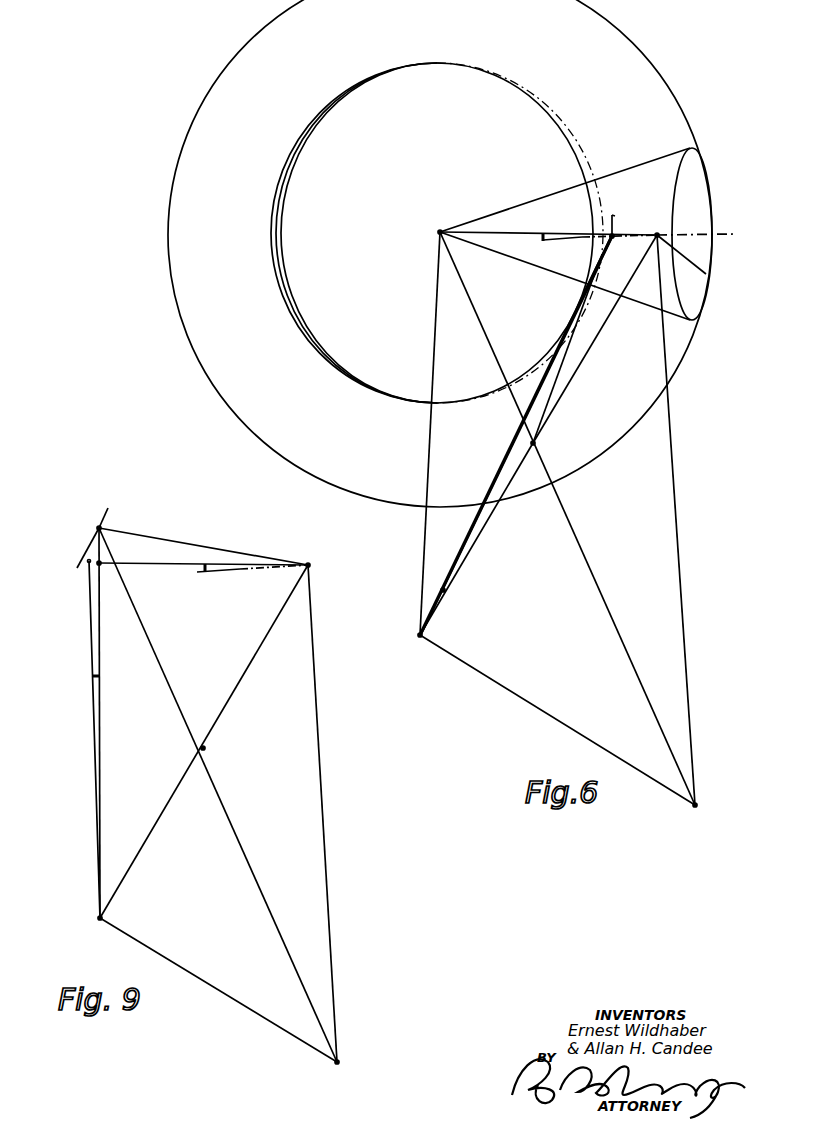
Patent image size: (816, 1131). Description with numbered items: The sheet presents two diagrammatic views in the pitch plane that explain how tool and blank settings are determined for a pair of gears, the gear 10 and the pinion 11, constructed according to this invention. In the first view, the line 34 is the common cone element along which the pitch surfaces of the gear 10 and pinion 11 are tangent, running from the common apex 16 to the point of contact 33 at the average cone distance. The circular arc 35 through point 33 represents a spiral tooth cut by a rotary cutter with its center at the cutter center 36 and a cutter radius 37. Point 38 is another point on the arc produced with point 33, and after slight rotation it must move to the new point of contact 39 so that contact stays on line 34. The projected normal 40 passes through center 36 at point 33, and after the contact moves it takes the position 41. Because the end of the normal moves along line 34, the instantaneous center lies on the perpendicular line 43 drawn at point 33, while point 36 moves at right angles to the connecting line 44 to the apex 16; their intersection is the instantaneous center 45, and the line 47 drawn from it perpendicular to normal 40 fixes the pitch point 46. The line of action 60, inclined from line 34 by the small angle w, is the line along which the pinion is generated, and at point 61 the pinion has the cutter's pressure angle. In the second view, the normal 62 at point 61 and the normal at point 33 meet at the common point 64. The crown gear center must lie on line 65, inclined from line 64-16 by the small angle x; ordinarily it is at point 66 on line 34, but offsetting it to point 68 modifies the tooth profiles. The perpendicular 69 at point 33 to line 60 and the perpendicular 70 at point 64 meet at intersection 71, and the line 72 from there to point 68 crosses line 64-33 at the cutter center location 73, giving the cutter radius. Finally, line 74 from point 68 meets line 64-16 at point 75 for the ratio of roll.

In FIG. 6, the gear 10 is at (666, 104).
In FIG. 6, the pinion 11 is at (693, 177).
In FIG. 6, the common apex 16 is at (440, 232).
In FIG. 9, the common apex 16 is at (88, 564).
In FIG. 6, the point of contact 33 is at (658, 233).
In FIG. 9, the point of contact 33 is at (311, 565).
In FIG. 6, the common cone element 34 is at (519, 233).
In FIG. 9, the common cone element 34 is at (150, 562).
In FIG. 6, the circular arc 35 is at (696, 262).
In FIG. 6, the cutter center 36 is at (538, 443).
In FIG. 6, the cutter radius 37 is at (581, 368).
In FIG. 6, the point on arc 38 is at (615, 218).
In FIG. 6, the new point of contact 39 is at (617, 236).
In FIG. 6, the projected normal 40 is at (490, 521).
In FIG. 6, the moved normal position 41 is at (500, 462).
In FIG. 6, the perpendicular line 43 is at (679, 537).
In FIG. 6, the connecting line 44 is at (594, 582).
In FIG. 6, the instantaneous center 45 is at (698, 805).
In FIG. 6, the pitch point 46 is at (410, 649).
In FIG. 6, the perpendicular from instantaneous center 47 is at (552, 716).
In FIG. 6, the line of action 60 is at (554, 243).
In FIG. 9, the line of action 60 is at (227, 570).
In FIG. 6, the point in line of action 61 is at (613, 239).
In FIG. 6, the projected normal of pinion tooth curve 62 is at (520, 436).
In FIG. 6, the common intersection point 64 is at (445, 590).
In FIG. 9, the common intersection point 64 is at (100, 918).
In FIG. 9, the crown gear center line 65 is at (101, 738).
In FIG. 9, the ordinary crown gear center 66 is at (101, 566).
In FIG. 9, the offset crown gear center 68 is at (97, 527).
In FIG. 9, the perpendicular at point 33 69 is at (323, 760).
In FIG. 9, the perpendicular at point 64 70 is at (223, 995).
In FIG. 9, the intersection of perpendiculars 71 is at (341, 1064).
In FIG. 9, the connecting line to crown gear center 72 is at (237, 822).
In FIG. 9, the cutter center location 73 is at (206, 749).
In FIG. 9, the line from crown gear center 74 is at (106, 512).
In FIG. 9, the intersection point on line 64-16 75 is at (88, 547).
In FIG. 6, the angle w is at (540, 240).
In FIG. 9, the angle w is at (199, 570).
In FIG. 9, the angle x is at (93, 675).